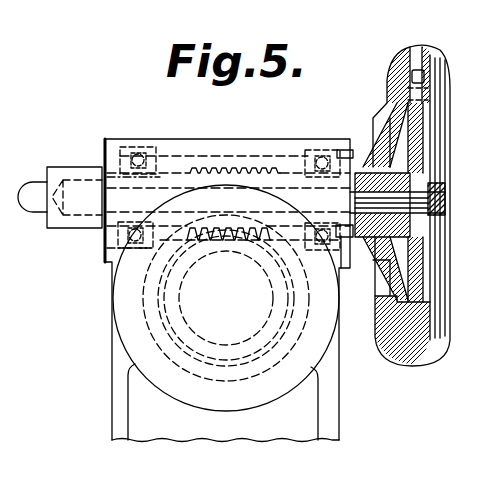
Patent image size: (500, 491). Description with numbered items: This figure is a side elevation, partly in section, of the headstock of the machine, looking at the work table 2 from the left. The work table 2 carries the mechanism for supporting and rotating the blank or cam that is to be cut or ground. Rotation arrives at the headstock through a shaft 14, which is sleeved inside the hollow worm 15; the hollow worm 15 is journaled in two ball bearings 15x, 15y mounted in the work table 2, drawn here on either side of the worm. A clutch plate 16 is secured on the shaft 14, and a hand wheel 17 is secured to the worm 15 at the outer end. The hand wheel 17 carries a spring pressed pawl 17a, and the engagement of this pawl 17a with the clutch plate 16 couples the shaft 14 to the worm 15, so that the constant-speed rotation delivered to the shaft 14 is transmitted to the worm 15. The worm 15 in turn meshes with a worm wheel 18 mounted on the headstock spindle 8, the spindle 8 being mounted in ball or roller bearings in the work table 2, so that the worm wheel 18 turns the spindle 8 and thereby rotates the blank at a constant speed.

The work table 2 is at (330, 420).
The headstock spindle 8 is at (237, 343).
The shaft 14 is at (79, 185).
The hollow worm 15 is at (243, 166).
The ball bearing 15x is at (165, 120).
The ball bearing 15y is at (324, 157).
The clutch plate 16 is at (426, 154).
The hand wheel 17 is at (426, 325).
The spring pressed pawl 17a is at (421, 72).
The worm wheel 18 is at (182, 355).